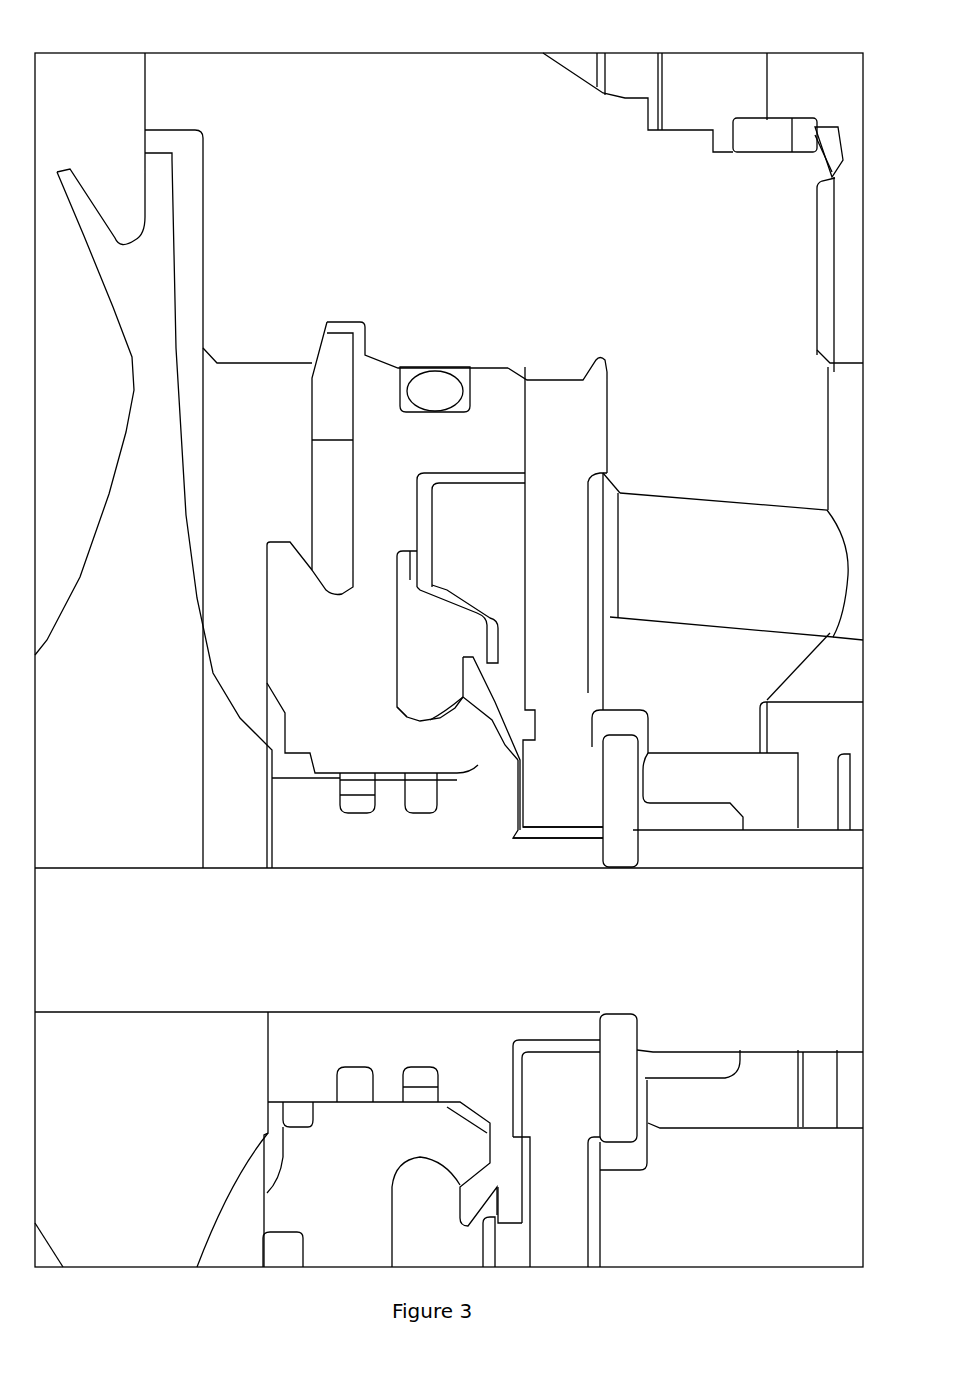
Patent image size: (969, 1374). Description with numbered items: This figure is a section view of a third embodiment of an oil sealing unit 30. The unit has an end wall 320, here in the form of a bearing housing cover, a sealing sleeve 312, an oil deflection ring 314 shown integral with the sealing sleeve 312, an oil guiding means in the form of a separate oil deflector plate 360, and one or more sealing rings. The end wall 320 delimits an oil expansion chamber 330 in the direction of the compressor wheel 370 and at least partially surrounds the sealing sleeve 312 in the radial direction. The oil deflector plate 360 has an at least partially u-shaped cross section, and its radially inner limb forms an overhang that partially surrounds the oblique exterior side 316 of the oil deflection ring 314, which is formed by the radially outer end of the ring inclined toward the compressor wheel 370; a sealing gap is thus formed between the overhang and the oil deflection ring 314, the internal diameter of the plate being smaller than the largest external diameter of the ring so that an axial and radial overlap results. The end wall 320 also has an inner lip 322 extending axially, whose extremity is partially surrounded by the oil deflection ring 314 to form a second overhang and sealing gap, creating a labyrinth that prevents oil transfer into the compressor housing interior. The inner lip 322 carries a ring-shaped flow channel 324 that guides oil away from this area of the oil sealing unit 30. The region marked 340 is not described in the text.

The oil sealing unit 30 is at (362, 34).
The sealing sleeve 312 is at (375, 848).
The oil deflection ring 314 is at (500, 822).
The oblique exterior side 316 is at (495, 687).
The end wall 320 is at (348, 643).
The inner lip 322 is at (442, 742).
The ring-shaped flow channel 324 is at (422, 722).
The oil expansion chamber 330 is at (491, 548).
The body portion 340 is at (798, 945).
The oil deflector plate 360 is at (480, 598).
The compressor wheel 370 is at (151, 701).